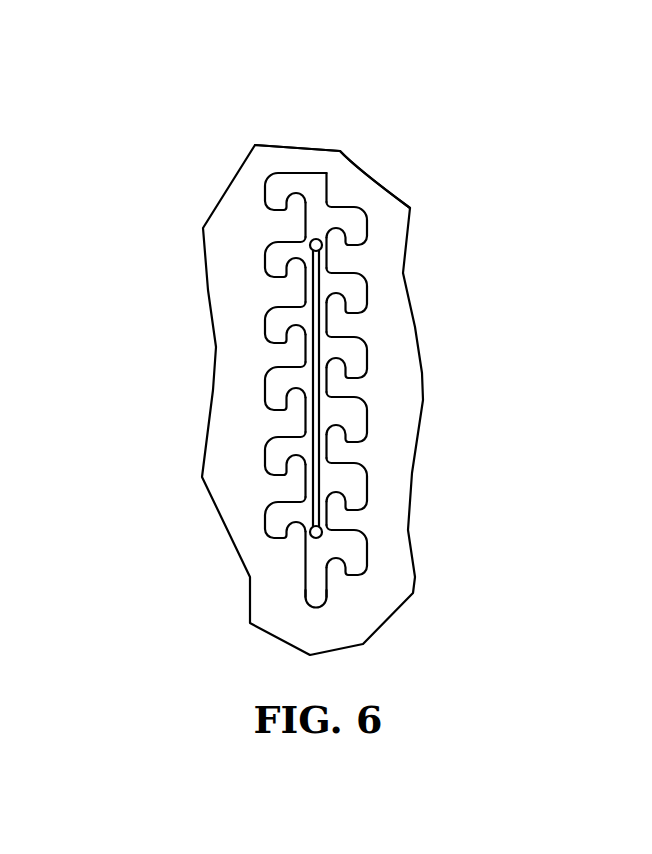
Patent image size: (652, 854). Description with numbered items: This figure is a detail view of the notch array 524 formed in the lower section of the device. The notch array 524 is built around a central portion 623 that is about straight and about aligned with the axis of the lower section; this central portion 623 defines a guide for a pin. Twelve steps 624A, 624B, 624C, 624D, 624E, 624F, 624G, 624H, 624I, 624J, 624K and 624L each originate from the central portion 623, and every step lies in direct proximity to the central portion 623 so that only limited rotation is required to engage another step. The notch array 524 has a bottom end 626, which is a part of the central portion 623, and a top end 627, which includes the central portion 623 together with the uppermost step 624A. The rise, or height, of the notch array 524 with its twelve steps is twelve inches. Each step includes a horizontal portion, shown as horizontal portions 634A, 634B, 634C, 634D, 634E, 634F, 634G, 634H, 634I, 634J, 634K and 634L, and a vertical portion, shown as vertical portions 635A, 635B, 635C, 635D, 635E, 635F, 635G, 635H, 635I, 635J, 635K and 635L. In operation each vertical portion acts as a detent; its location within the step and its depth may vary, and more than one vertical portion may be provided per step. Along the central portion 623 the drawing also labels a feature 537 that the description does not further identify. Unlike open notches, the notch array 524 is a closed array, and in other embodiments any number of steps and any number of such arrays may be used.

The notch array 524 is at (92, 192).
The central slot 537 is at (321, 321).
The central portion 623 is at (316, 187).
The bottom end 626 is at (316, 608).
The top end 627 is at (343, 153).
The step 624A is at (267, 209).
The step 624B is at (368, 234).
The step 624C is at (267, 276).
The step 624D is at (368, 299).
The step 624E is at (267, 342).
The step 624F is at (368, 364).
The step 624G is at (267, 409).
The step 624H is at (368, 431).
The step 624I is at (267, 474).
The step 624J is at (368, 498).
The step 624K is at (267, 537).
The step 624L is at (368, 564).
The horizontal portion 634A is at (297, 172).
The horizontal portion 634B is at (334, 205).
The horizontal portion 634C is at (298, 239).
The horizontal portion 634D is at (334, 271).
The horizontal portion 634E is at (298, 304).
The horizontal portion 634F is at (334, 335).
The horizontal portion 634G is at (298, 364).
The horizontal portion 634H is at (334, 395).
The horizontal portion 634I is at (298, 434).
The horizontal portion 634J is at (334, 461).
The horizontal portion 634K is at (298, 499).
The horizontal portion 634L is at (334, 528).
The vertical portion 635A is at (265, 198).
The vertical portion 635B is at (368, 227).
The vertical portion 635C is at (265, 263).
The vertical portion 635D is at (368, 292).
The vertical portion 635E is at (265, 330).
The vertical portion 635F is at (368, 357).
The vertical portion 635G is at (265, 393).
The vertical portion 635H is at (368, 424).
The vertical portion 635I is at (265, 460).
The vertical portion 635J is at (368, 491).
The vertical portion 635K is at (265, 527).
The vertical portion 635L is at (368, 557).